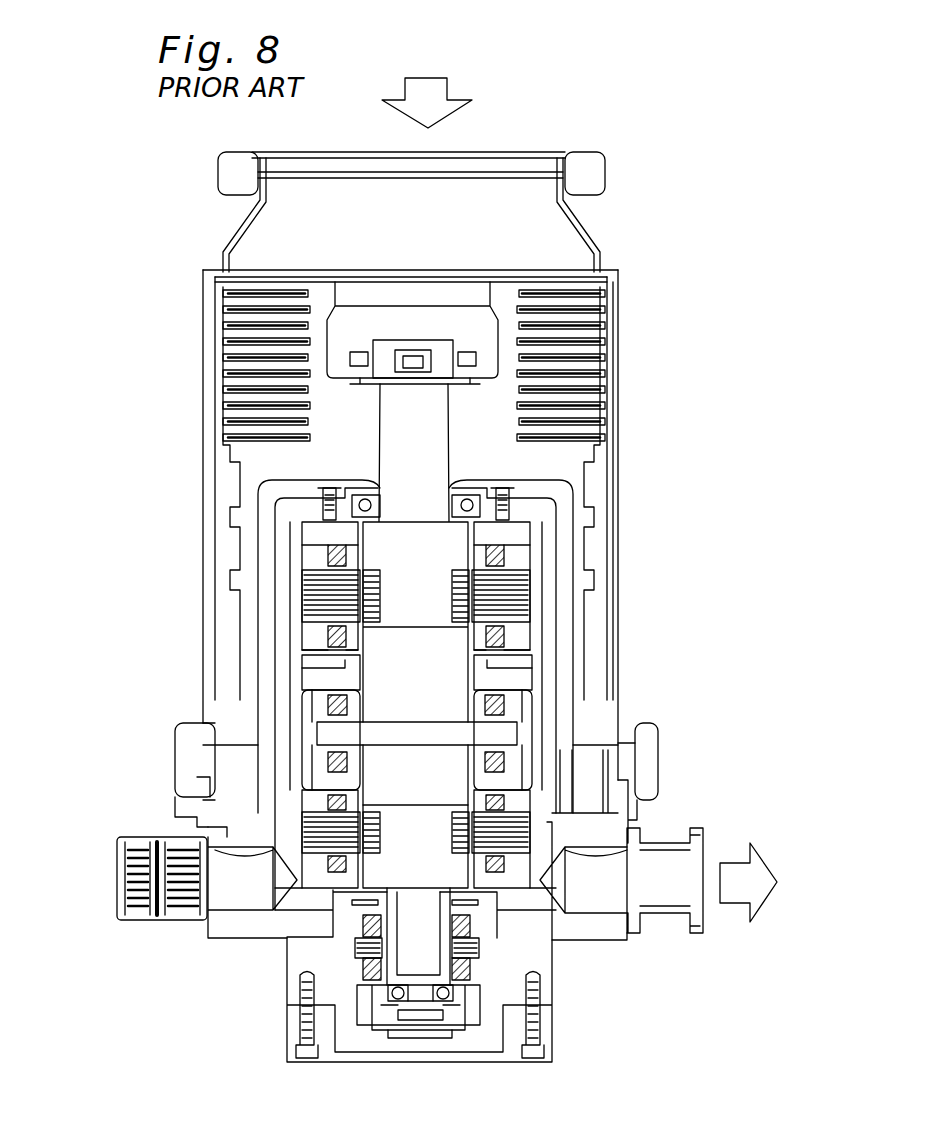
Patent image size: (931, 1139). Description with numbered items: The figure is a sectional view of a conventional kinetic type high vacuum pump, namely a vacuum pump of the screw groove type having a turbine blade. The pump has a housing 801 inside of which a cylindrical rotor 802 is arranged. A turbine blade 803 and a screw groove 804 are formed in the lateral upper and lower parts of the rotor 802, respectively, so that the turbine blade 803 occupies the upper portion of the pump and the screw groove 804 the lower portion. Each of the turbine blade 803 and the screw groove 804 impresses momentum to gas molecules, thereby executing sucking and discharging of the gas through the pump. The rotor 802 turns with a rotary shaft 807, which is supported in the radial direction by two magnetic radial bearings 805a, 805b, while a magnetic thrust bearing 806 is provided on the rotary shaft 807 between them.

The housing 801 is at (605, 420).
The cylindrical rotor 802 is at (272, 468).
The turbine blade 803 is at (222, 367).
The screw groove 804 is at (590, 607).
The magnetic radial bearing 805a is at (300, 600).
The magnetic radial bearing 805b is at (300, 832).
The magnetic thrust bearing 806 is at (316, 768).
The rotary shaft 807 is at (400, 545).